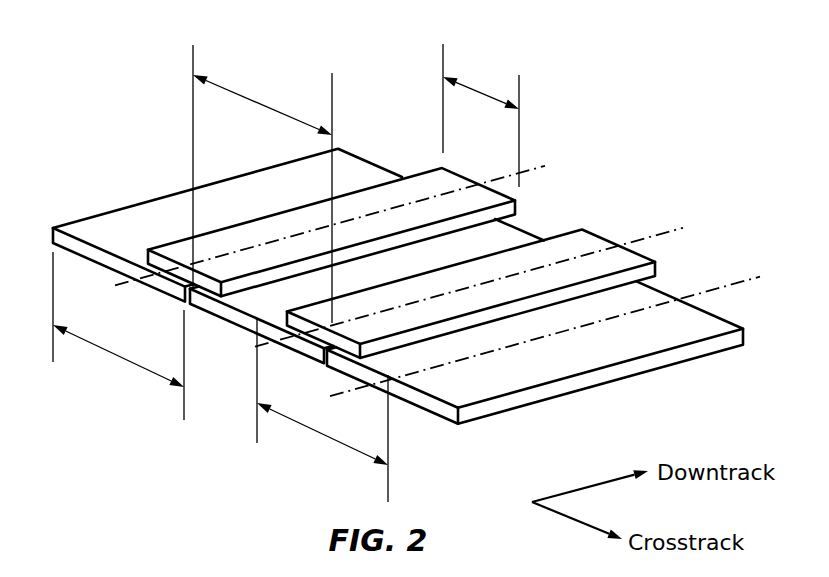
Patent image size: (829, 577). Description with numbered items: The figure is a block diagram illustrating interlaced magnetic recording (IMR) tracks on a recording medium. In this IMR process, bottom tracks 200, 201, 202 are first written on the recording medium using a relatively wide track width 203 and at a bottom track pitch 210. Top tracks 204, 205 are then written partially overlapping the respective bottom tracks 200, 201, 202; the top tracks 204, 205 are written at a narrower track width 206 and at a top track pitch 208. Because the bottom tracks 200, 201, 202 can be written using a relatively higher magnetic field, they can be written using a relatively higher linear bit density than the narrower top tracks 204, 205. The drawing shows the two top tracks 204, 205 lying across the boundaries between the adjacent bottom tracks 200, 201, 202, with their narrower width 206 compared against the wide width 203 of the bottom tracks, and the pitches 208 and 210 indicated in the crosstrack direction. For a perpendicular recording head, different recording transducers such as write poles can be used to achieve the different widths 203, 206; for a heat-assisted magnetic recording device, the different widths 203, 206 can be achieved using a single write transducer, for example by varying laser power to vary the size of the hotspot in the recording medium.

The bottom track 200 is at (122, 273).
The bottom track 201 is at (222, 320).
The bottom track 202 is at (428, 412).
The track width 203 is at (118, 360).
The top track 204 is at (413, 182).
The top track 205 is at (600, 237).
The track width 206 is at (478, 92).
The top track pitch 208 is at (268, 104).
The bottom track pitch 210 is at (318, 432).